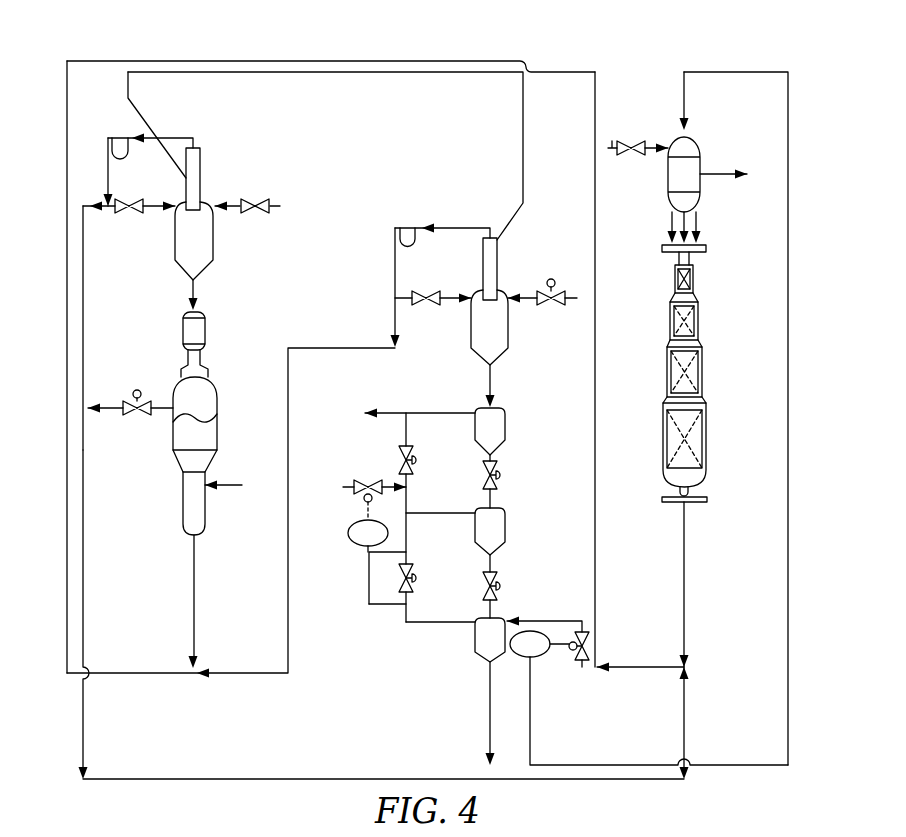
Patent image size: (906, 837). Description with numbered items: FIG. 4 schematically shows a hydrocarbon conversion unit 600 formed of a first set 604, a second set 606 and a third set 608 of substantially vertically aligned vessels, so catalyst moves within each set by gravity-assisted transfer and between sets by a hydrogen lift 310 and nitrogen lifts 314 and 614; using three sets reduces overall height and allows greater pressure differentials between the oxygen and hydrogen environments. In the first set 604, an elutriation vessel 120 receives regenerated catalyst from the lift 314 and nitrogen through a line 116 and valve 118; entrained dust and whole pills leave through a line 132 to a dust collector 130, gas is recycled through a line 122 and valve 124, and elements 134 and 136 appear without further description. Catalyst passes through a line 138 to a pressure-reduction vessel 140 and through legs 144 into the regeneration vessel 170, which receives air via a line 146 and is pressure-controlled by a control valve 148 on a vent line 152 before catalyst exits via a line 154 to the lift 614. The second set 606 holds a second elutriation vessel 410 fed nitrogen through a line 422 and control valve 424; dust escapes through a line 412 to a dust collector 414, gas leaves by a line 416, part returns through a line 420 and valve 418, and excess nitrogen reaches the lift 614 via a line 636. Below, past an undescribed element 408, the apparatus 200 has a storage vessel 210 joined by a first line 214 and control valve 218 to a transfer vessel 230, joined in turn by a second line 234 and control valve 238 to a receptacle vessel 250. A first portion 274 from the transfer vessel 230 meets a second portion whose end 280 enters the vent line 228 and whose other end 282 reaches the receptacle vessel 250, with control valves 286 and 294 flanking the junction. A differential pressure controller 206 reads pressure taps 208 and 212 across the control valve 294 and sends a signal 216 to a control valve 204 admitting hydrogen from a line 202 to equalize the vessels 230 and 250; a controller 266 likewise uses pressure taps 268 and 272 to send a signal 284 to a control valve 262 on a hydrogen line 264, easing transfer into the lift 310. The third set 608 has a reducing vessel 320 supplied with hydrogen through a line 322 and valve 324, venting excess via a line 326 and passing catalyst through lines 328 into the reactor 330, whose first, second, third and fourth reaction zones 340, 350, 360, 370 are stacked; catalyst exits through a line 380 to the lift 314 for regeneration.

The hydrocarbon conversion unit 600 is at (110, 50).
The first set 604 is at (198, 122).
The second set 606 is at (491, 202).
The third set 608 is at (707, 62).
The lift 614 is at (296, 61).
The line 636 is at (258, 672).
The line 116 is at (278, 206).
The valve 118 is at (247, 198).
The elutriation vessel 120 is at (213, 240).
The line 122 is at (108, 212).
The valve 124 is at (140, 214).
The dust collector 130 is at (117, 138).
The line 132 is at (172, 138).
The overhead conduit 134 is at (108, 147).
The overhead product line 136 is at (83, 594).
The line 138 is at (194, 288).
The pressure-reduction vessel 140 is at (183, 332).
The legs 144 is at (153, 369).
The line 146 is at (228, 486).
The control valve 148 is at (145, 415).
The vent line 152 is at (106, 412).
The line 154 is at (194, 594).
The regeneration vessel 170 is at (217, 388).
The apparatus 200 is at (369, 444).
The line 202 is at (348, 487).
The control valve 204 is at (363, 480).
The differential pressure controller 206 is at (368, 527).
The pressure tap 208 is at (385, 553).
The storage vessel 210 is at (505, 413).
The pressure tap 212 is at (368, 600).
The first line 214 is at (495, 458).
The signal 216 is at (363, 499).
The control valve 218 is at (500, 487).
The vent line 228 is at (415, 413).
The transfer vessel 230 is at (505, 523).
The second line 234 is at (488, 565).
The control valve 238 is at (500, 596).
The receptacle vessel 250 is at (475, 640).
The control valve 262 is at (588, 624).
The line 264 is at (585, 665).
The controller 266 is at (530, 643).
The pressure tap 268 is at (505, 650).
The pressure tap 272 is at (530, 751).
The first portion 274 is at (425, 513).
The end 280 is at (407, 430).
The another end 282 is at (407, 623).
The signal 284 is at (553, 650).
The control valve 286 is at (398, 452).
The control valve 294 is at (414, 590).
The lift 310 is at (788, 600).
The lift 314 is at (595, 97).
The reducing vessel 320 is at (694, 135).
The line 322 is at (613, 141).
The valve 324 is at (640, 156).
The line 326 is at (724, 174).
The lines 328 is at (652, 225).
The reactor 330 is at (654, 358).
The first reaction zone 340 is at (693, 280).
The second reaction zone 350 is at (698, 320).
The third reaction zone 360 is at (702, 372).
The fourth reaction zone 370 is at (706, 438).
The line 380 is at (684, 580).
The catalyst transfer line 408 is at (490, 381).
The elutriation vessel 410 is at (497, 252).
The line 412 is at (452, 229).
The dust collector 414 is at (408, 228).
The line 416 is at (395, 269).
The valve 418 is at (413, 291).
The line 420 is at (447, 299).
The line 422 is at (570, 300).
The control valve 424 is at (553, 280).